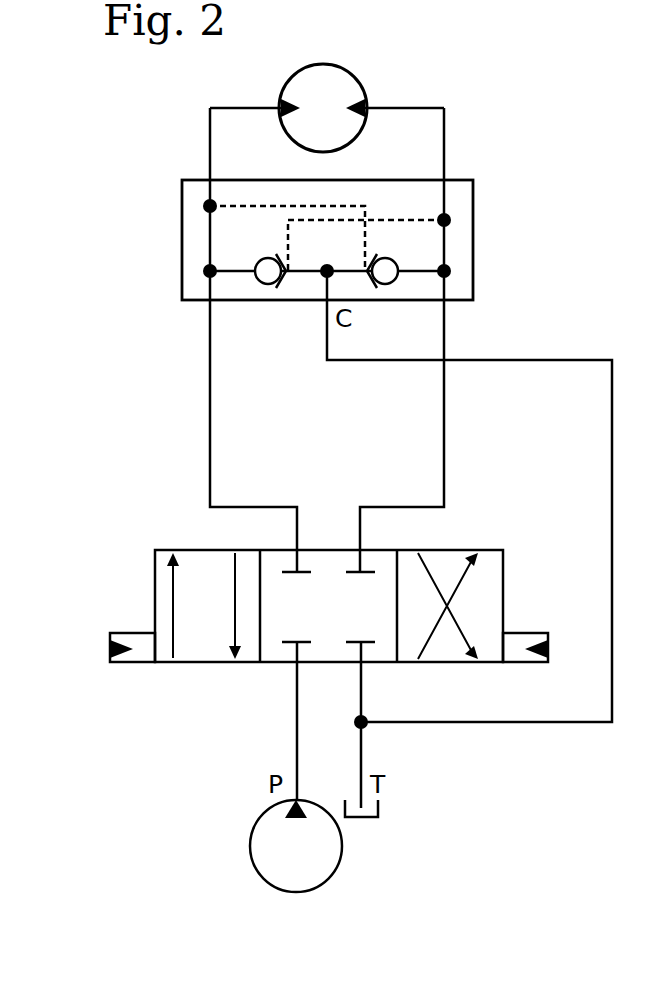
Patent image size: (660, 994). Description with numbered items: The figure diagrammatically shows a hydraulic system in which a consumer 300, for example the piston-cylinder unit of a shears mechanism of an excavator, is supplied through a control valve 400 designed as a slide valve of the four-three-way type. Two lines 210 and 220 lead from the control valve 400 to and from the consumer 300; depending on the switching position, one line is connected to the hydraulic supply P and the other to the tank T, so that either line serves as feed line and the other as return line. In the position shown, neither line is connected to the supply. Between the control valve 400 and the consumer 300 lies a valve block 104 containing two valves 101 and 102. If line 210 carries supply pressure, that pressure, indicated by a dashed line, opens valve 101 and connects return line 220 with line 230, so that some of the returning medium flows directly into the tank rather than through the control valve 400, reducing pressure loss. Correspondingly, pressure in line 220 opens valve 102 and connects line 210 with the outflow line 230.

The consumer 300 is at (363, 90).
The valve block with check valves 104 is at (473, 239).
The valve 101 is at (268, 288).
The valve 102 is at (385, 288).
The outflow line 230 is at (387, 362).
The line 220 is at (210, 422).
The line 210 is at (444, 422).
The control valve 400 is at (497, 548).